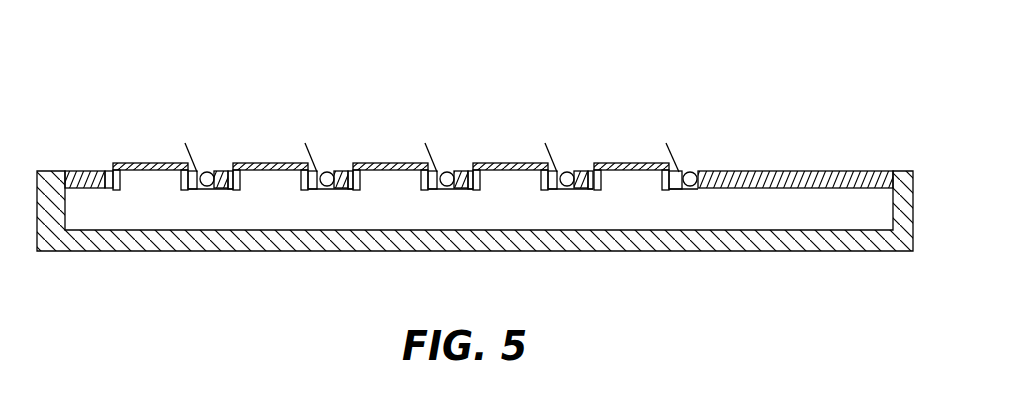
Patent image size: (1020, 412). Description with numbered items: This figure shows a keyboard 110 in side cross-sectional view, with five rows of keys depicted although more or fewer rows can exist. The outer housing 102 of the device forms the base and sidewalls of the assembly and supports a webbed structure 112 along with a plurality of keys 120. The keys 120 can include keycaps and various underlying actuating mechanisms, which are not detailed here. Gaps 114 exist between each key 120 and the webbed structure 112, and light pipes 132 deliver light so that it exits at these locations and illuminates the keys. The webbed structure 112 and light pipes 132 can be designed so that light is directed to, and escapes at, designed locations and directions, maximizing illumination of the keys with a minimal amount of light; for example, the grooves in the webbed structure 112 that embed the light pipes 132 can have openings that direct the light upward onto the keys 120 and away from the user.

The display assembly 110 is at (138, 74).
The outer housing 102 is at (788, 252).
The webbed structure 112 is at (758, 172).
The key 120 is at (612, 162).
The gap 114 is at (682, 190).
The light pipe 132 is at (692, 172).